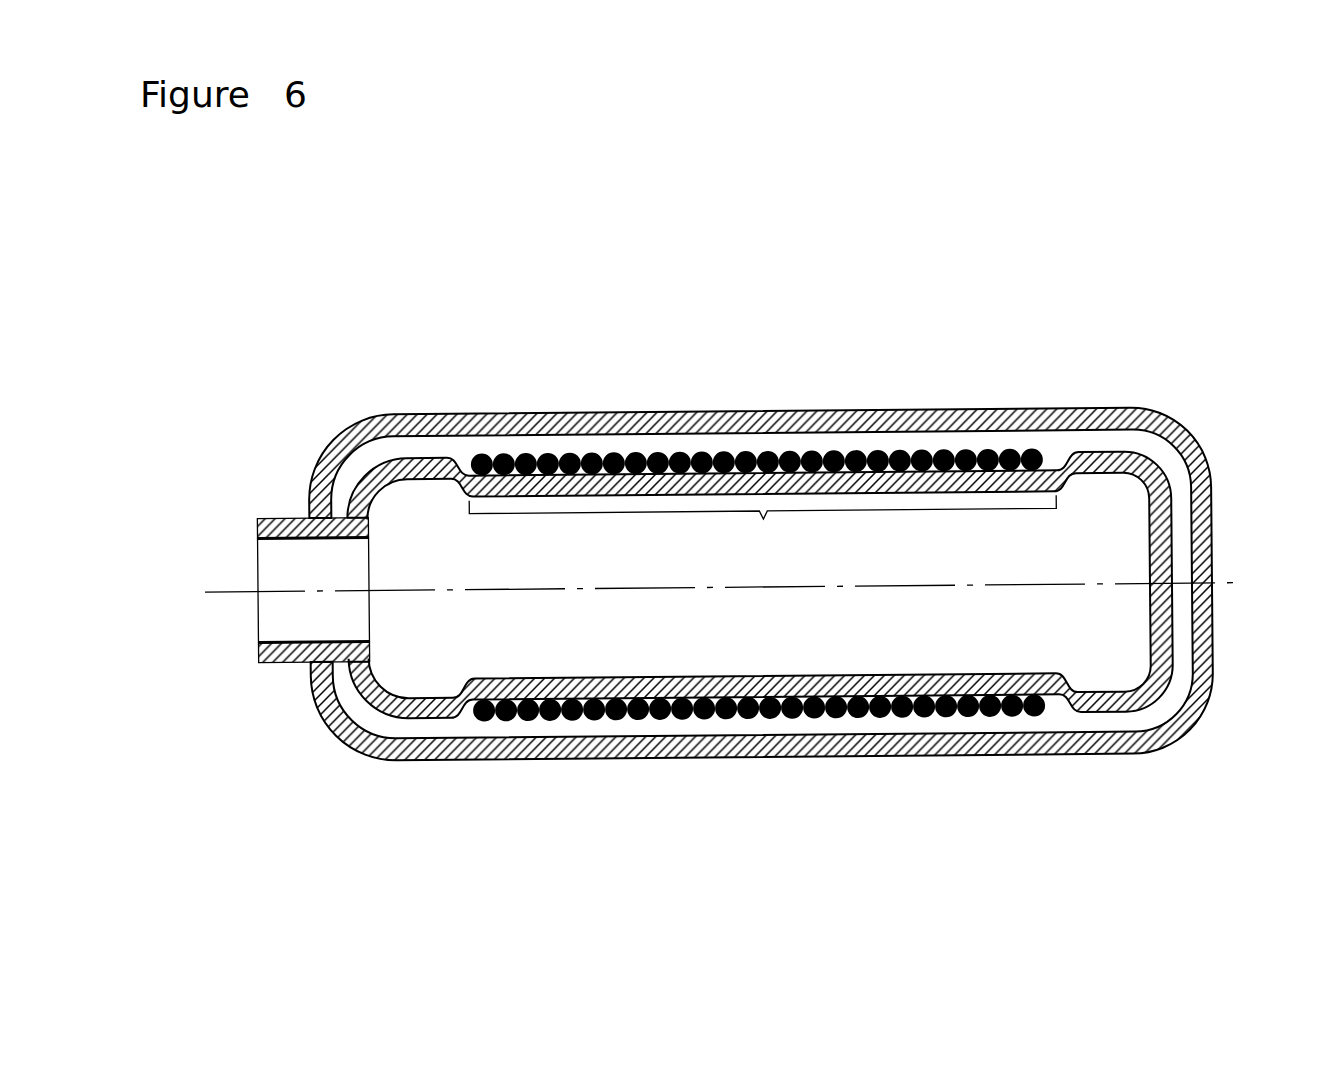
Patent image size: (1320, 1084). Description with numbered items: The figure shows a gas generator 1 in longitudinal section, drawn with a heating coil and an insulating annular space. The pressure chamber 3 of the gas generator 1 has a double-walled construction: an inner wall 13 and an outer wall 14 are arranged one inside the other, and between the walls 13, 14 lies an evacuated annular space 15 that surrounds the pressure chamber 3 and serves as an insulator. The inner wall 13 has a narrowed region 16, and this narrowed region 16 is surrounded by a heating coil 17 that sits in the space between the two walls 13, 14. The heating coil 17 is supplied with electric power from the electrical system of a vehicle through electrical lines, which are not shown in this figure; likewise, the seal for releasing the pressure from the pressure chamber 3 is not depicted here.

The gas generator 1 is at (346, 785).
The pressure chamber 3 is at (760, 620).
The wall 13 is at (1148, 683).
The wall 14 is at (1036, 408).
The annular space 15 is at (1178, 490).
The narrowed region 16 is at (762, 527).
The heating coil 17 is at (483, 455).